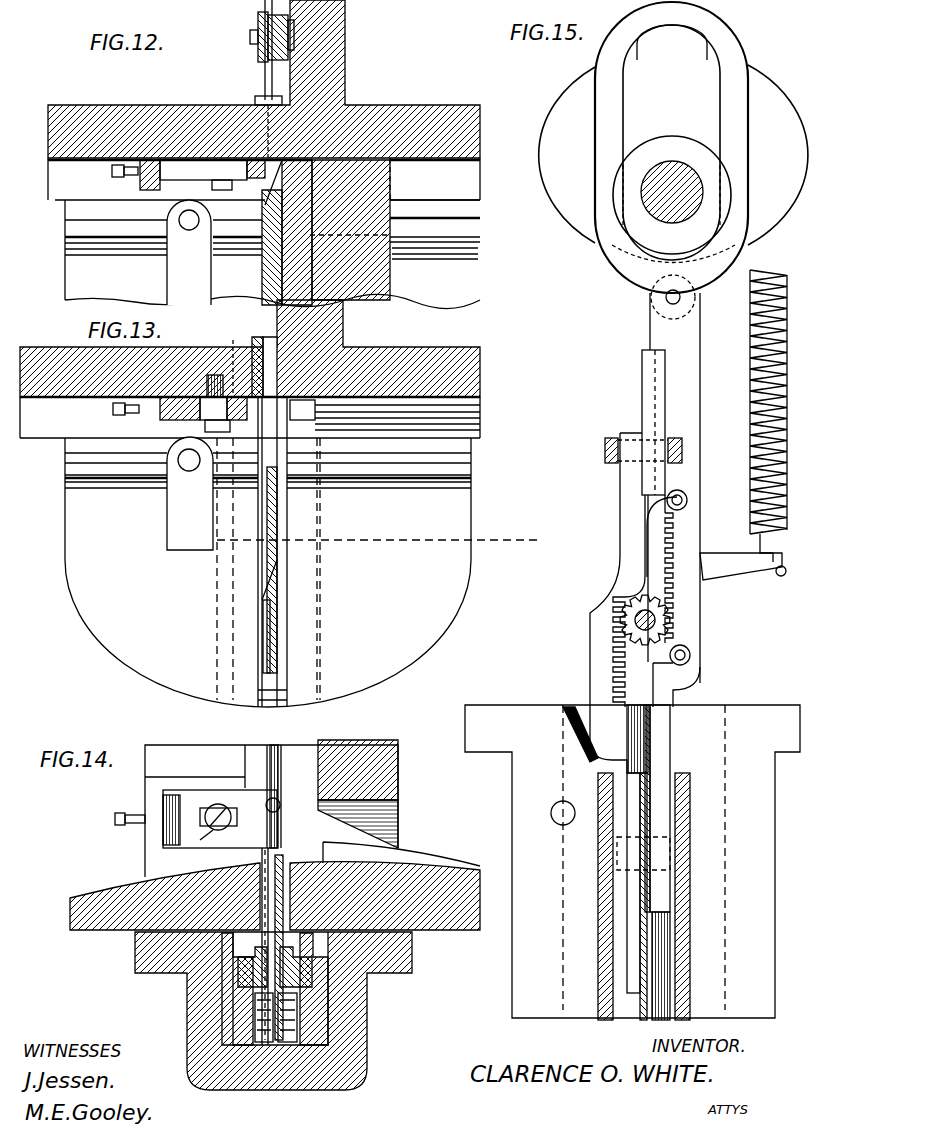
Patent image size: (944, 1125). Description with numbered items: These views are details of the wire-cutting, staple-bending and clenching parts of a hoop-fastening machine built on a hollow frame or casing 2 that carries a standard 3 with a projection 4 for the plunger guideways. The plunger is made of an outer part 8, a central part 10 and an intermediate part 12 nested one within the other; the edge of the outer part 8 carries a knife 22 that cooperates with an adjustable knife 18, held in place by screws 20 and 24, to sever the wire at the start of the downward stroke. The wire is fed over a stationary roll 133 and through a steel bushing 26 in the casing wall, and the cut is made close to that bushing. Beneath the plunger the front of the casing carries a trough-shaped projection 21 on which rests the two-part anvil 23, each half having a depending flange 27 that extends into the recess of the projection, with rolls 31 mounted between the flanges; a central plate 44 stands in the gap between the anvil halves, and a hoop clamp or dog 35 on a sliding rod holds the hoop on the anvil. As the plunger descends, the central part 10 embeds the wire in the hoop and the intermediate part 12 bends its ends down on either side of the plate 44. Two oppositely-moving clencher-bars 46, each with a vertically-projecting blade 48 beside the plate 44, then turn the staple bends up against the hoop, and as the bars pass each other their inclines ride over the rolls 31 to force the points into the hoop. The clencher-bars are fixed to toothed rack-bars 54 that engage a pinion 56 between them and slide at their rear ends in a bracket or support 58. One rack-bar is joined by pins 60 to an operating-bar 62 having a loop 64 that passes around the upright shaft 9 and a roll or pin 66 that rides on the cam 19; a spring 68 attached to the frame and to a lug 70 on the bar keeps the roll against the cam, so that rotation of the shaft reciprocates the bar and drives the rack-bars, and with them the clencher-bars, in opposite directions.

In FIG. 15, the frame or casing 2 is at (782, 705).
In FIG. 12, the standard 3 is at (345, 75).
In FIG. 13, the standard 3 is at (344, 340).
In FIG. 12, the projection 4 is at (392, 270).
In FIG. 14, the projection 4 is at (386, 777).
In FIG. 13, the outer part of the plunger 8 is at (292, 330).
In FIG. 15, the upright shaft 9 is at (672, 195).
In FIG. 12, the central part of the plunger 10 is at (264, 288).
In FIG. 12, the intermediate part of the plunger 12 is at (264, 243).
In FIG. 12, the adjustable knife 18 is at (202, 175).
In FIG. 13, the adjustable knife 18 is at (263, 403).
In FIG. 14, the adjustable knife 18 is at (220, 819).
In FIG. 15, the cam 19 is at (553, 180).
In FIG. 12, the screw 20 is at (112, 171).
In FIG. 13, the screw 20 is at (113, 409).
In FIG. 14, the screw 20 is at (118, 822).
In FIG. 14, the projection 21 is at (365, 1040).
In FIG. 12, the knife 22 is at (266, 181).
In FIG. 12, the anvil 23 is at (466, 268).
In FIG. 13, the anvil 23 is at (470, 506).
In FIG. 14, the anvil 23 is at (410, 878).
In FIG. 13, the screw 24 is at (205, 426).
In FIG. 14, the screw 24 is at (213, 830).
In FIG. 12, the steel bushing 26 is at (256, 100).
In FIG. 13, the steel bushing 26 is at (245, 356).
In FIG. 14, the steel bushing 26 is at (281, 805).
In FIG. 14, the depending flange 27 is at (235, 1015).
In FIG. 15, the depending flange 27 is at (600, 885).
In FIG. 14, the rolls 31 is at (265, 1045).
In FIG. 12, the hoop clamp or dog 35 is at (180, 271).
In FIG. 13, the hoop clamp or dog 35 is at (175, 537).
In FIG. 13, the central plate 44 is at (270, 517).
In FIG. 14, the central plate 44 is at (265, 860).
In FIG. 14, the clencher-bars 46 is at (245, 975).
In FIG. 15, the clencher-bars 46 is at (620, 768).
In FIG. 13, the blade 48 is at (283, 425).
In FIG. 14, the blade 48 is at (283, 860).
In FIG. 15, the blade 48 is at (652, 730).
In FIG. 15, the rack-bars 54 is at (593, 665).
In FIG. 15, the pinion 56 is at (625, 622).
In FIG. 15, the bracket or support 58 is at (605, 450).
In FIG. 15, the pins 60 is at (683, 500).
In FIG. 15, the operating-bar 62 is at (690, 405).
In FIG. 15, the loop 64 is at (730, 90).
In FIG. 15, the roll or pin 66 is at (666, 299).
In FIG. 15, the spring 68 is at (752, 437).
In FIG. 15, the lug 70 is at (750, 572).
In FIG. 12, the stationary roll 133 is at (258, 62).